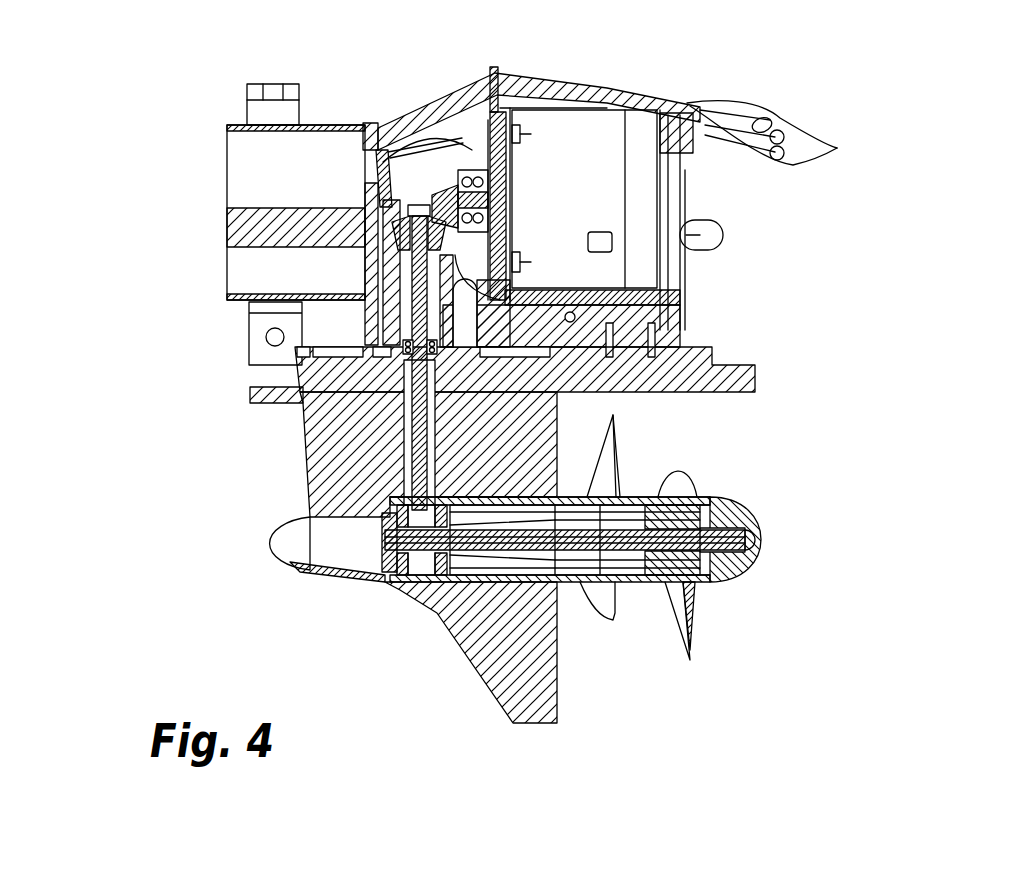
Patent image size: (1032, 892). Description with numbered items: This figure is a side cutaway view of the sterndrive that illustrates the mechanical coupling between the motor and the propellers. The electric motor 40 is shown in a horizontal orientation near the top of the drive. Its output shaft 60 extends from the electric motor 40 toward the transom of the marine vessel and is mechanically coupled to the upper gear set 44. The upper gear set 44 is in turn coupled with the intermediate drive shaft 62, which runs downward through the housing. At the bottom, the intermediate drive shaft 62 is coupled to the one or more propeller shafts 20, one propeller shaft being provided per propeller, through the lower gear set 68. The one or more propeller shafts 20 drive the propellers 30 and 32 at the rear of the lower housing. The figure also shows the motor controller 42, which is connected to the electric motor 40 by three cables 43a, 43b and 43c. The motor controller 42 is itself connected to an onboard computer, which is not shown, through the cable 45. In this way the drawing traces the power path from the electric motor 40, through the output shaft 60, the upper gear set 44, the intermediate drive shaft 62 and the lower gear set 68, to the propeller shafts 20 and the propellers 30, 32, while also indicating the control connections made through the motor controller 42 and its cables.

The propeller shaft 20 is at (423, 566).
The propeller 30 is at (617, 620).
The propeller 32 is at (690, 640).
The electric motor 40 is at (637, 265).
The motor controller 42 is at (692, 105).
The cable 43a is at (838, 148).
The cable 43b is at (868, 148).
The cable 43c is at (894, 151).
The upper gear set 44 is at (421, 198).
The cable 45 is at (450, 150).
The output shaft 60 is at (448, 182).
The intermediate drive shaft 62 is at (423, 386).
The lower gear set 68 is at (395, 503).